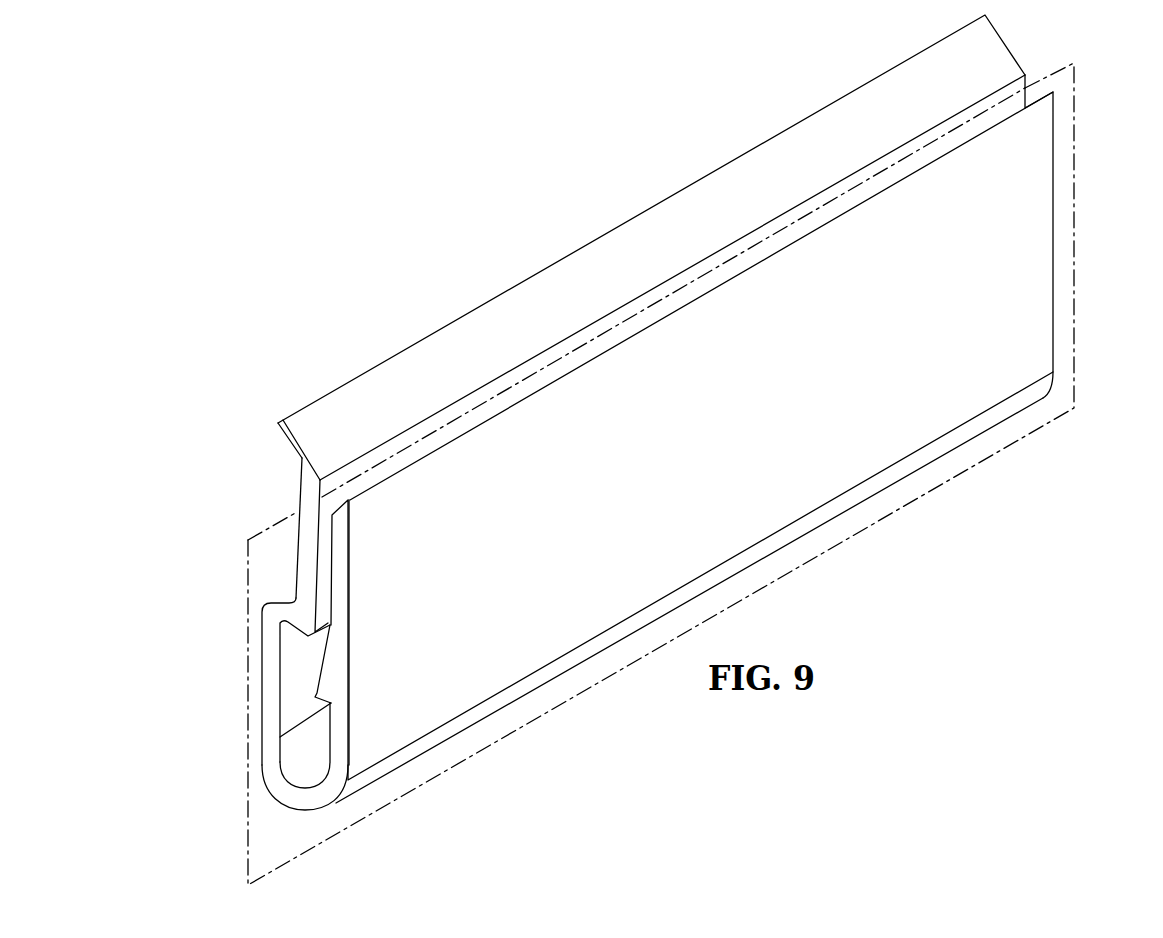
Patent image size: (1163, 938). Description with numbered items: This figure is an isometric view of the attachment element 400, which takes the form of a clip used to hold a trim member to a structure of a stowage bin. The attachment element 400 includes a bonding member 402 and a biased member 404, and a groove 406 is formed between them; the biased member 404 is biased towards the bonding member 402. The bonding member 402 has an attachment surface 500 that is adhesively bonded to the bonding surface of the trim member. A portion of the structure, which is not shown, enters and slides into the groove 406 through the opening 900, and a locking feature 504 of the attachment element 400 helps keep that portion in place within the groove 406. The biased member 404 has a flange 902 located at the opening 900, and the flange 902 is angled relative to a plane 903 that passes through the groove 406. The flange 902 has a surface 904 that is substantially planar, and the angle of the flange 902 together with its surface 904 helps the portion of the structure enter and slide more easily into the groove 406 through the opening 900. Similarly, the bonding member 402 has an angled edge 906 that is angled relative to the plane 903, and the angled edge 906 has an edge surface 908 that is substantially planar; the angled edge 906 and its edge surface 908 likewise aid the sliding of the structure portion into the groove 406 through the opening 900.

The opening 900 is at (1042, 74).
The plane 903 is at (1075, 148).
The attachment surface 500 is at (1037, 233).
The bonding member 402 is at (1037, 325).
The attachment element 400 is at (479, 300).
The surface 904 is at (392, 381).
The flange 902 is at (283, 442).
The angled edge 906 is at (355, 460).
The edge surface 908 is at (343, 502).
The biased member 404 is at (293, 562).
The locking feature 504 is at (318, 676).
The groove 406 is at (304, 760).